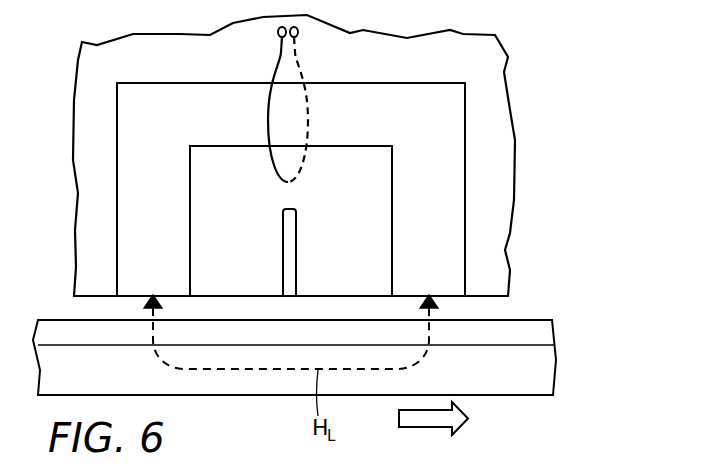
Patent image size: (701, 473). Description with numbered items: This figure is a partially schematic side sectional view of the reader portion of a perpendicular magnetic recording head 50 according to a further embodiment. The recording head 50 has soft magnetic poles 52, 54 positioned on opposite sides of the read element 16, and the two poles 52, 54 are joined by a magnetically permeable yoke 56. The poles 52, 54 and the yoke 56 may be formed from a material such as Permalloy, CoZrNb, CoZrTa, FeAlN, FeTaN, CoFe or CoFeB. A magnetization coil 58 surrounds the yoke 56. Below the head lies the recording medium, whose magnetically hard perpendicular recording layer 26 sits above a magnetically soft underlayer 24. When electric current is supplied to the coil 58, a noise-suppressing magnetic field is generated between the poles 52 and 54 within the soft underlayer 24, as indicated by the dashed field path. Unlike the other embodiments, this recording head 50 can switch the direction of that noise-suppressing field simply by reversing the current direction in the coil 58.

The perpendicular magnetic recording head 50 is at (100, 61).
The yoke 56 is at (366, 128).
The soft magnetic pole 52 is at (437, 224).
The soft magnetic pole 54 is at (163, 224).
The magnetization coil 58 is at (300, 64).
The read element 16 is at (296, 234).
The perpendicular recording layer 26 is at (540, 331).
The soft underlayer 24 is at (540, 371).